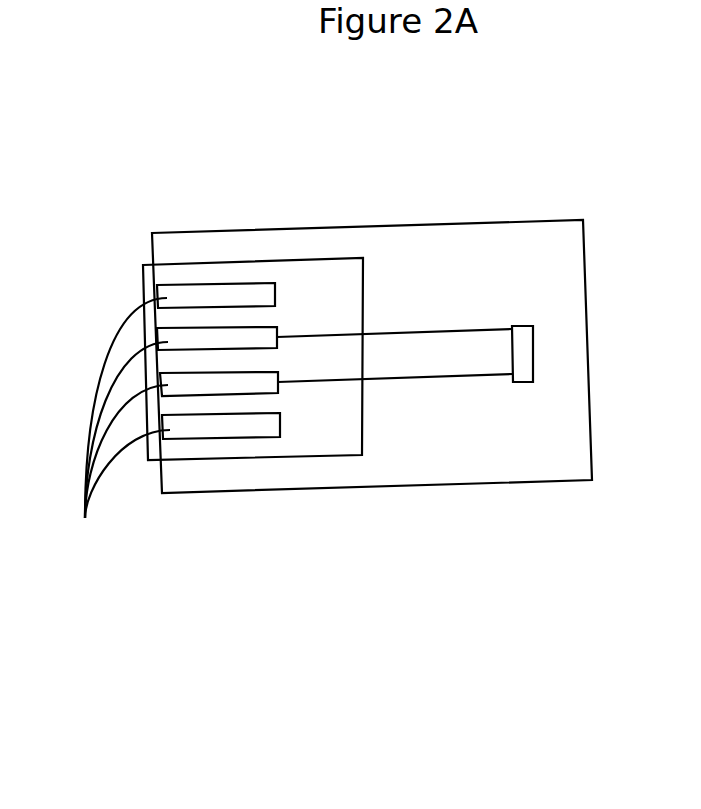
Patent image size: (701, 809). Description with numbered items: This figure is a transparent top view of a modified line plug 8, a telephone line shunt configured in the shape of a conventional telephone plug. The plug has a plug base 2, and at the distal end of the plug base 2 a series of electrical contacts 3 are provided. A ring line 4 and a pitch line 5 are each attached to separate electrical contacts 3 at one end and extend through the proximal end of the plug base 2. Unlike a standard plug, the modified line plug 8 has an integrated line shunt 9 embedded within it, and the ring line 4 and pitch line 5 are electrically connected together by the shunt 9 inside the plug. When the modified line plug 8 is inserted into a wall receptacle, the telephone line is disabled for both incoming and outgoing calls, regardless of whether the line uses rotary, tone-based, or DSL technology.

The modified line plug 8 is at (141, 188).
The plug base 2 is at (497, 245).
The electrical contacts 3 is at (122, 430).
The ring line 4 is at (398, 332).
The pitch line 5 is at (402, 382).
The line shunt 9 is at (523, 350).